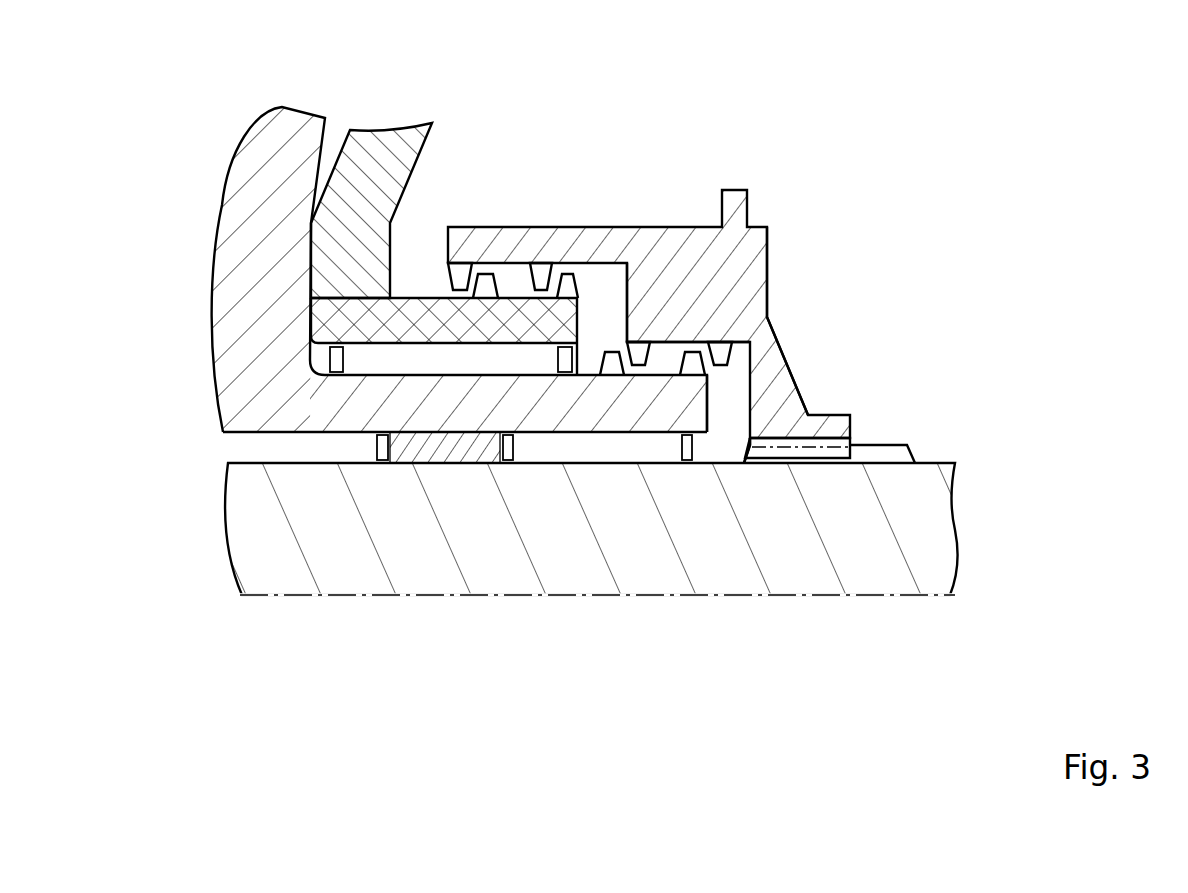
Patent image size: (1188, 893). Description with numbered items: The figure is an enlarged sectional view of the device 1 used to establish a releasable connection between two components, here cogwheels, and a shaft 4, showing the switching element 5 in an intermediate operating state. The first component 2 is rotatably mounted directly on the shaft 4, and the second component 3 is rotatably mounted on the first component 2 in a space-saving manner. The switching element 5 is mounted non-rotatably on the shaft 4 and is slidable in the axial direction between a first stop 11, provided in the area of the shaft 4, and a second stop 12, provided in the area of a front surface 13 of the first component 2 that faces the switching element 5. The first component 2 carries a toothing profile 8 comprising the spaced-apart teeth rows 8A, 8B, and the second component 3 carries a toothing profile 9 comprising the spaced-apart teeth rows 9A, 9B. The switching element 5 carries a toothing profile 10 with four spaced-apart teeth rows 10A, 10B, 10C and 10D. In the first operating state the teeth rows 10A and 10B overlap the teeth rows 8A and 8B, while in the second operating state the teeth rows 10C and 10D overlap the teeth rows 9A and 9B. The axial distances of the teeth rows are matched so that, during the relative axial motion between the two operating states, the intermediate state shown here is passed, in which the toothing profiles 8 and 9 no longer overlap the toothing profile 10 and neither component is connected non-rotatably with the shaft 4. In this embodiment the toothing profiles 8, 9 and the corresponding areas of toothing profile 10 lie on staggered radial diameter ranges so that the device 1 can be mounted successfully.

The device 1 is at (657, 126).
The first component 2 is at (275, 220).
The second component 3 is at (384, 170).
The shaft 4 is at (278, 520).
The switching element 5 is at (588, 240).
The toothing profile 8 is at (585, 372).
The teeth row 8A is at (616, 363).
The teeth row 8B is at (690, 365).
The toothing profile 9 is at (592, 286).
The teeth row 9A is at (485, 290).
The teeth row 9B is at (565, 287).
The toothing profile 10 is at (440, 280).
The teeth row 10A is at (737, 275).
The teeth row 10B is at (767, 313).
The teeth row 10C is at (460, 283).
The teeth row 10D is at (538, 280).
The first stop 11 is at (924, 448).
The second stop 12 is at (752, 442).
The front surface 13 is at (714, 398).